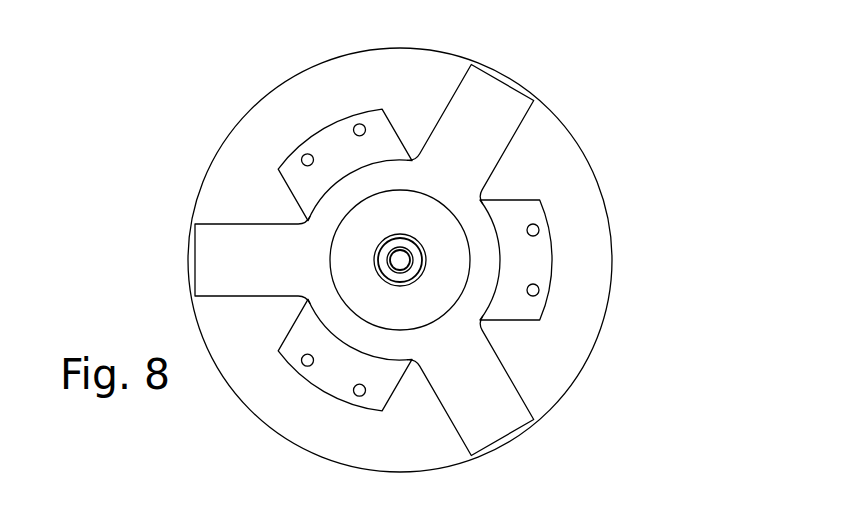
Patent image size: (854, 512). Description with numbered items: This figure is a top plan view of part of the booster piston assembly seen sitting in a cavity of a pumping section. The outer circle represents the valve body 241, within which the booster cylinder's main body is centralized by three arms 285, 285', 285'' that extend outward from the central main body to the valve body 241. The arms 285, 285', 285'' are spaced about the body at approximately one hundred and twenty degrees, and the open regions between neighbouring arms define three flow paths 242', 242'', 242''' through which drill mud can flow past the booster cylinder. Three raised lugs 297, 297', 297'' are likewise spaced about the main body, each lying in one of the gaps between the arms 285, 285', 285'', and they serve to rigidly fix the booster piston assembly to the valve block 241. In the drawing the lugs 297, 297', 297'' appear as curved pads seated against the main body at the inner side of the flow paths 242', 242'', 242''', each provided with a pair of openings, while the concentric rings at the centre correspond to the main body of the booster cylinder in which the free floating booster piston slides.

The valve body 241 is at (570, 131).
The arm 285 is at (504, 127).
The arm 285' is at (196, 260).
The arm 285'' is at (522, 392).
The flow path 242' is at (337, 158).
The flow path 242'' is at (345, 369).
The flow path 242''' is at (529, 241).
The raised lug 297 is at (254, 145).
The raised lug 297' is at (269, 400).
The raised lug 297'' is at (619, 261).